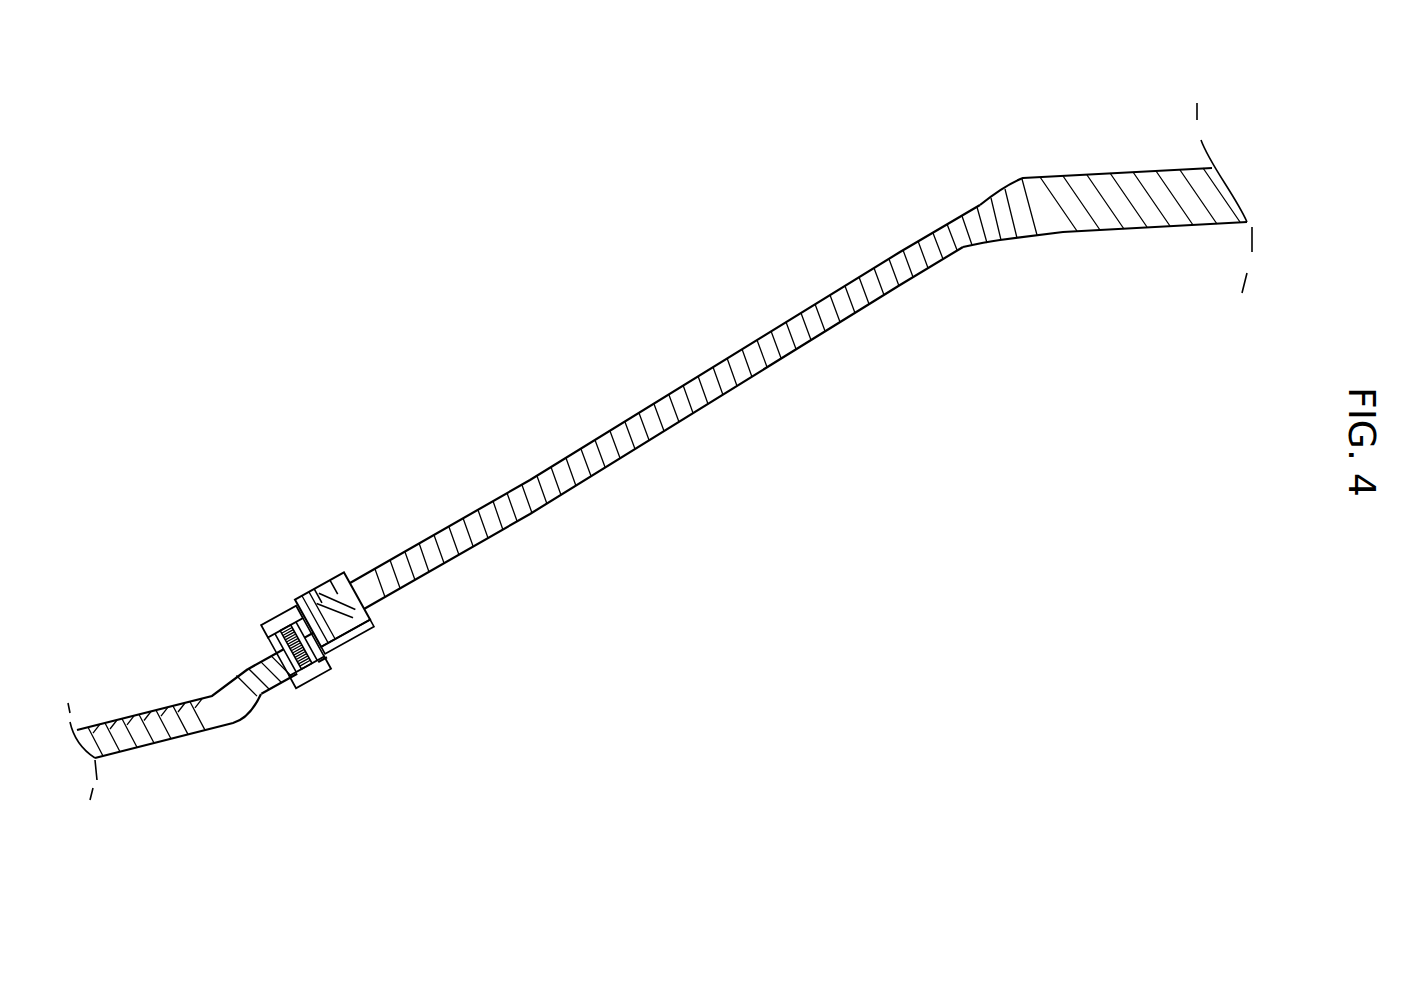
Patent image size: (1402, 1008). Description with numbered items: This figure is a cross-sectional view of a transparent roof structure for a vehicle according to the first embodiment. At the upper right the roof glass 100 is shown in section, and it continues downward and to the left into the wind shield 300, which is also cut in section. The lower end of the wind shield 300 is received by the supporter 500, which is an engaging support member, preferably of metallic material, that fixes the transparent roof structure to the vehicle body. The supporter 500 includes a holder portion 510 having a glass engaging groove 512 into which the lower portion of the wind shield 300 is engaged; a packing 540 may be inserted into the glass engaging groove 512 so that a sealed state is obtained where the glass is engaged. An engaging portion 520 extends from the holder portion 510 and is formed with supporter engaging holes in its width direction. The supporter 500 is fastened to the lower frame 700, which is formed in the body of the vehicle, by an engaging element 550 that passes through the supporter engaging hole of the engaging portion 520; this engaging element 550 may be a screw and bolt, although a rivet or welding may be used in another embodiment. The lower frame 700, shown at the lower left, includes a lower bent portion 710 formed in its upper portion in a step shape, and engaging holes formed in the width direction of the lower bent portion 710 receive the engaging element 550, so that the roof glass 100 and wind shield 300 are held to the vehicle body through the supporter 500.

The roof glass 100 is at (1058, 190).
The wind shield 300 is at (688, 400).
The supporter 500 is at (308, 615).
The holder portion 510 is at (320, 590).
The glass engaging groove 512 is at (383, 567).
The engaging portion 520 is at (250, 658).
The packing 540 is at (362, 627).
The engaging element 550 is at (280, 620).
The lower frame 700 is at (252, 761).
The lower bent portion 710 is at (277, 700).